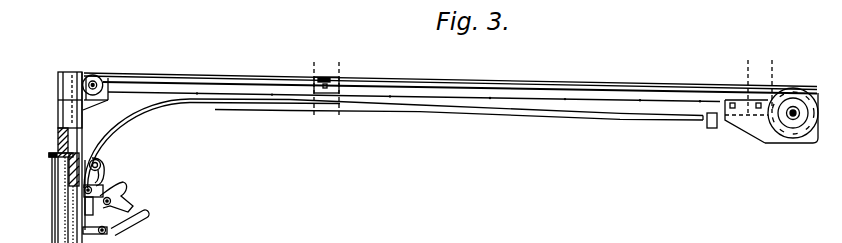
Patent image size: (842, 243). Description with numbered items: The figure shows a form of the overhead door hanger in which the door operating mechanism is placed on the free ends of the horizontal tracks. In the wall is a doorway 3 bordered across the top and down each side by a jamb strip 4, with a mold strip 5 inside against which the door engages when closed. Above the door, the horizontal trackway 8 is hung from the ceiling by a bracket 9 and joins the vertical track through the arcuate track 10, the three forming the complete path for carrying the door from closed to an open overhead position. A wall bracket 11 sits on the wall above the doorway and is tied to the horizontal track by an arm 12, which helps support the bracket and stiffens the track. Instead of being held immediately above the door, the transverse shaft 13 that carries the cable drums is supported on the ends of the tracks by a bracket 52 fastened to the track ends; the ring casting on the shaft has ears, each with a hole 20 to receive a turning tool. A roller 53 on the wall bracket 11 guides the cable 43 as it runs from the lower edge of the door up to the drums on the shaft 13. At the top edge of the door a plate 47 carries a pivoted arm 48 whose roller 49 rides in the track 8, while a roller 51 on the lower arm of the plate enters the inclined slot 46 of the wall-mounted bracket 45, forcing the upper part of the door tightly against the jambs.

The doorway 3 is at (45, 158).
The jamb strip 4 is at (58, 135).
The mold strip 5 is at (56, 155).
The trackway 8 is at (445, 112).
The bracket 9 is at (334, 106).
The arcuate track 10 is at (150, 114).
The wall bracket 11 is at (78, 72).
The arm 12 is at (117, 90).
The transverse shaft 13 is at (794, 106).
The hole 20 is at (89, 48).
The cable 43 is at (97, 106).
The bracket 45 is at (124, 186).
The inclined slot 46 is at (128, 216).
The plate 47 is at (82, 213).
The arm 48 is at (98, 183).
The roller 49 is at (100, 164).
The roller 51 is at (110, 231).
The bracket 52 is at (744, 122).
The roller 53 is at (106, 76).